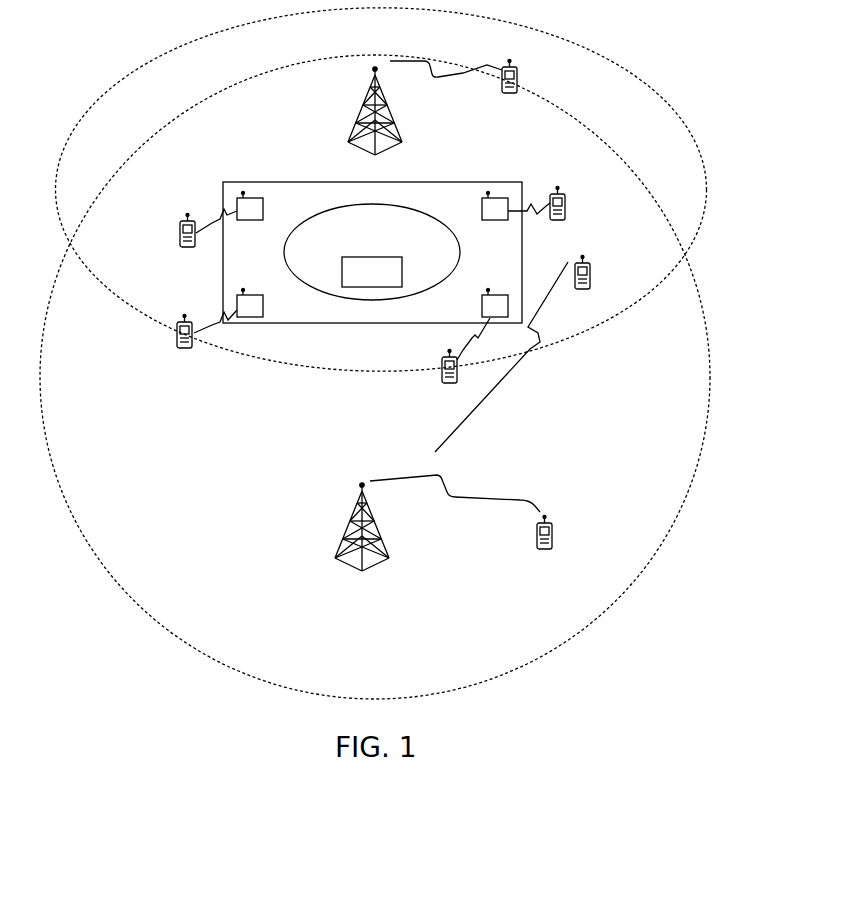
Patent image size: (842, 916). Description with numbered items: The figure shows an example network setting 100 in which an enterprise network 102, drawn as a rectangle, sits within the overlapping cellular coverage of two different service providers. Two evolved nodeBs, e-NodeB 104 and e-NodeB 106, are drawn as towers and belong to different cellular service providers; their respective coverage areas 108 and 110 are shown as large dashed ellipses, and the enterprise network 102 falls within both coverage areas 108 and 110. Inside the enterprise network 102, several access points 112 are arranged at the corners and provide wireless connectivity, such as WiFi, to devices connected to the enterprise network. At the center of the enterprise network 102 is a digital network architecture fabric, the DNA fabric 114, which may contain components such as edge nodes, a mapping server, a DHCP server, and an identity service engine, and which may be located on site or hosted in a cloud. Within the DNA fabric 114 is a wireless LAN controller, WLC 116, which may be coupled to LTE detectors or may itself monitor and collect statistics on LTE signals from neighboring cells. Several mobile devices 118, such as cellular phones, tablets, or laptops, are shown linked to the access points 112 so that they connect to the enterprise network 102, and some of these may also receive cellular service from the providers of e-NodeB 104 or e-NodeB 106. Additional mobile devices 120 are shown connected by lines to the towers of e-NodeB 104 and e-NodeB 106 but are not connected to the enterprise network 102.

The setting 100 is at (180, 653).
The enterprise network 102 is at (259, 182).
The e-NodeB 104 is at (337, 551).
The e-NodeB 106 is at (393, 115).
The coverage area 108 is at (690, 490).
The coverage area 110 is at (677, 113).
The access points 112 is at (264, 211).
The DNA fabric 114 is at (404, 206).
The wireless LAN controller 116 is at (368, 287).
The mobile devices 118 is at (178, 236).
The additional mobile devices 120 is at (509, 95).